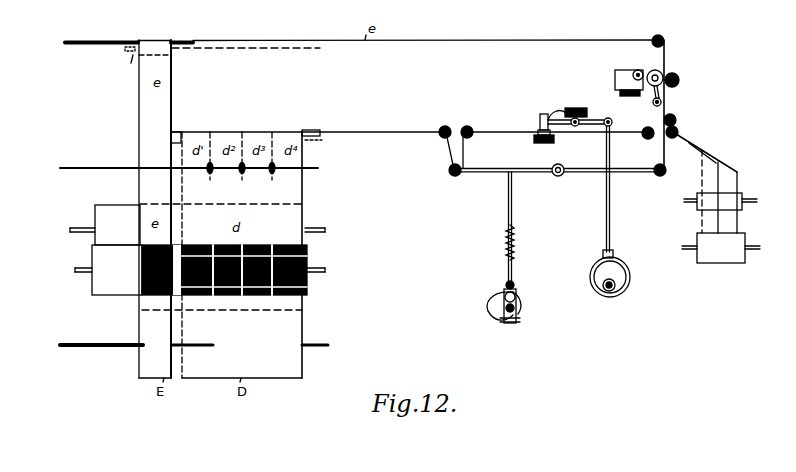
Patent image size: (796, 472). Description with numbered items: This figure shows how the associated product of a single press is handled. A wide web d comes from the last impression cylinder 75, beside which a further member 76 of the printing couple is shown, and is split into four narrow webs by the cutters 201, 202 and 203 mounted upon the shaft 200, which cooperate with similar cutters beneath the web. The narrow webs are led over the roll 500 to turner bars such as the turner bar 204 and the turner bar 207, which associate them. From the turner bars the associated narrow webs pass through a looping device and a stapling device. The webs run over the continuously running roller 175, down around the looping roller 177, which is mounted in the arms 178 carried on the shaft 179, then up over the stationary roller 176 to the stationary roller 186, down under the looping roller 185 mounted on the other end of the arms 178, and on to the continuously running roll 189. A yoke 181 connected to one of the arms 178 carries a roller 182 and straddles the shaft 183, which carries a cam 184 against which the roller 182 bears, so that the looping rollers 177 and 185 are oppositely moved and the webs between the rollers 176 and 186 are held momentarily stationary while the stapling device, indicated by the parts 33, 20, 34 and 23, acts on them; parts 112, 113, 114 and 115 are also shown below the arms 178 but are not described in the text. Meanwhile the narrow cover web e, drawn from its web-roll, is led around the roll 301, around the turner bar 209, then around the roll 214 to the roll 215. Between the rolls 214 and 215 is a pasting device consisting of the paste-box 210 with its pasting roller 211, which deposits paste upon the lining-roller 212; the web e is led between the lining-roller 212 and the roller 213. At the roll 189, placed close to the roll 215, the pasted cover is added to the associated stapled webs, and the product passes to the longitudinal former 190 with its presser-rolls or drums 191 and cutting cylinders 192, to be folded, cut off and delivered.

The turner bar 209 is at (106, 42).
The guide 301 is at (124, 68).
The turner bar 204 is at (180, 132).
The turner bar 207 is at (318, 130).
The roll 500 is at (306, 141).
The shaft 200 is at (103, 169).
The cutter 201 is at (211, 174).
The cutter 202 is at (242, 174).
The cutter 203 is at (272, 174).
The last impression cylinder 75 is at (310, 213).
The drum housing 76 is at (200, 270).
The roll 214 is at (665, 41).
The roller 213 is at (680, 80).
The lining-roller 212 is at (655, 70).
The pasting roller 211 is at (634, 71).
The paste-box 210 is at (615, 82).
The roll 215 is at (677, 120).
The roll 189 is at (679, 131).
The longitudinal former 190 is at (740, 177).
The presser-rolls or drums 191 is at (720, 201).
The cutting cylinders 192 is at (721, 248).
The continuously running roller 175 is at (446, 126).
The stationary roller 176 is at (470, 127).
The looping roller 177 is at (455, 177).
The arms 178 is at (531, 173).
The shaft 179 is at (563, 165).
The looping roller 185 is at (661, 177).
The stationary roller 186 is at (646, 139).
The lever 33 is at (559, 112).
The contact block 20 is at (586, 108).
The plunger 34 is at (539, 121).
The pivot 23 is at (600, 118).
The rod 112 is at (611, 213).
The weight 113 is at (594, 274).
The pin 114 is at (618, 291).
The ring 115 is at (627, 264).
The yoke 181 is at (514, 250).
The roller 182 is at (515, 285).
The shaft 183 is at (517, 312).
The cam 184 is at (487, 310).